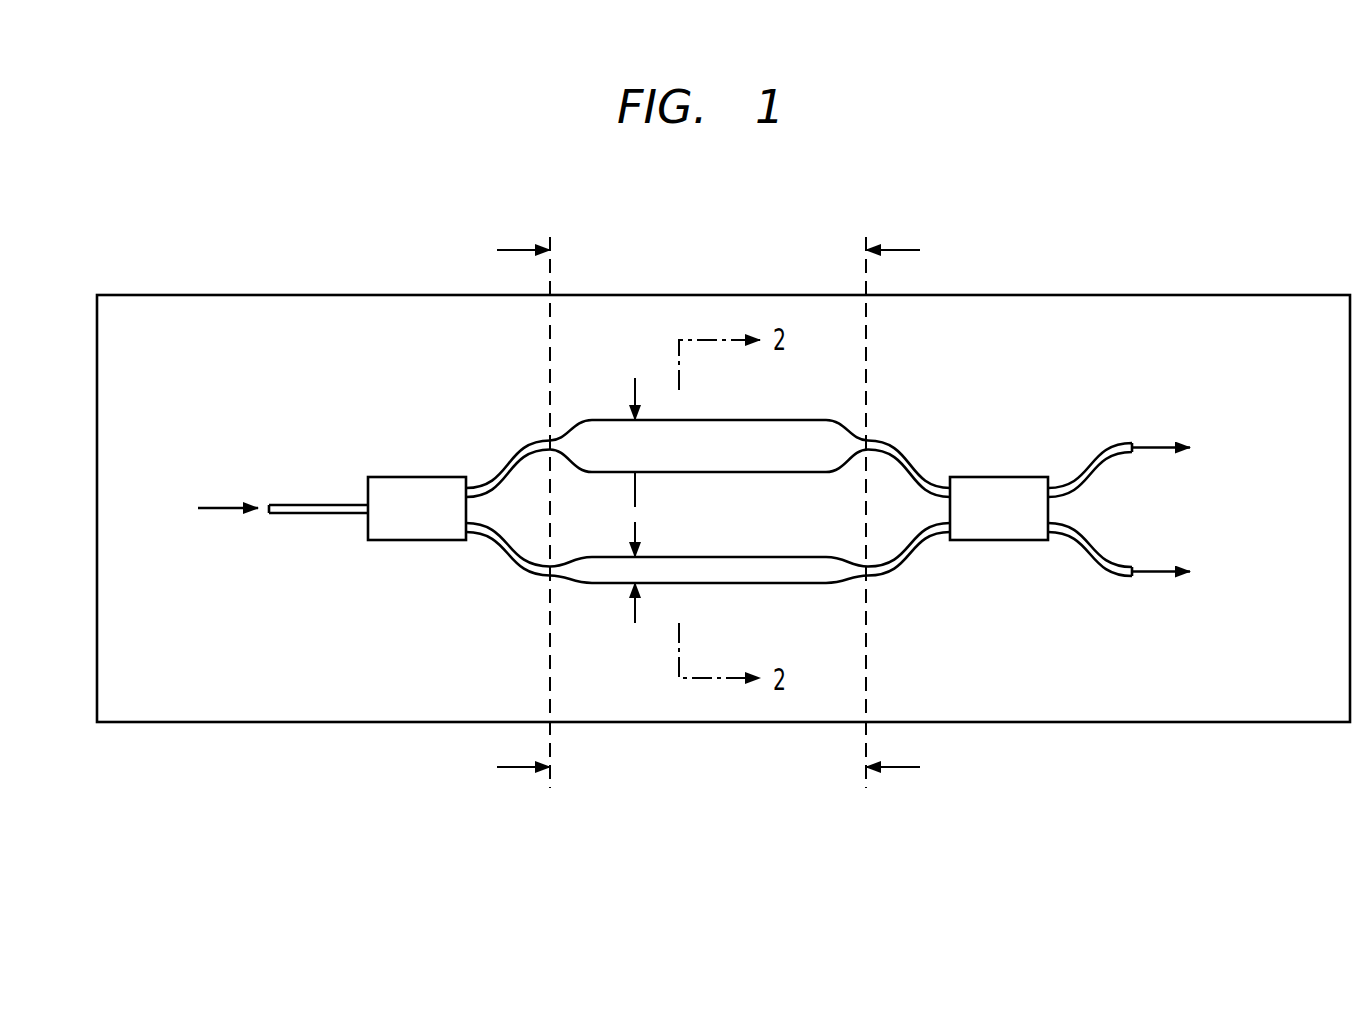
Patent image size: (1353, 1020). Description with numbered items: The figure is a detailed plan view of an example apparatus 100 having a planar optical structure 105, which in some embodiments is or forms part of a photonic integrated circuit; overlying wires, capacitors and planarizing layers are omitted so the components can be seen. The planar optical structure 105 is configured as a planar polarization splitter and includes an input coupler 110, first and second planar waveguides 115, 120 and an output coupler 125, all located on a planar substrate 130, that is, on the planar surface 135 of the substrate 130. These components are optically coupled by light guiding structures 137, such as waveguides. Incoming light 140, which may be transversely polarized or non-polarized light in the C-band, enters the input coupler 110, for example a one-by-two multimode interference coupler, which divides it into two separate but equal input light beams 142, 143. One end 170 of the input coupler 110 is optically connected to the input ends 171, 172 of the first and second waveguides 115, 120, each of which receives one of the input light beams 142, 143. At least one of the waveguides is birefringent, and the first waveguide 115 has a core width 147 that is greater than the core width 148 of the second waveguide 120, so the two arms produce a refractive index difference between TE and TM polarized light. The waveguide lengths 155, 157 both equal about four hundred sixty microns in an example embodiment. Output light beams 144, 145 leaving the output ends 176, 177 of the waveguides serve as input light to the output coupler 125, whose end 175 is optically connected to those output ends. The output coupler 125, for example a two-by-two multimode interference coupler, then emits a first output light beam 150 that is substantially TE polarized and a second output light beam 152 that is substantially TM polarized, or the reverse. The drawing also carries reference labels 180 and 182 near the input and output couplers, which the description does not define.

The apparatus 100 is at (190, 207).
The planar optical structure 105 is at (1016, 318).
The input coupler 110 is at (385, 477).
The first planar waveguide 115 is at (735, 420).
The second planar waveguide 120 is at (730, 583).
The output coupler 125 is at (1015, 477).
The planar substrate 130 is at (162, 704).
The planar surface 135 is at (298, 696).
The light guiding structures 137 is at (500, 460).
The incoming light 140 is at (225, 500).
The first input light beam 142 is at (459, 492).
The second input light beam 143 is at (459, 524).
The first output light beam from first waveguide 144 is at (995, 489).
The second output light beam from second waveguide 145 is at (995, 528).
The first core width 147 is at (635, 390).
The second core width 148 is at (635, 615).
The first output light beam 150 is at (1155, 447).
The second output light beam 152 is at (1155, 573).
The first waveguide length 155 is at (912, 250).
The second waveguide length 157 is at (912, 767).
The end of input coupler 170 is at (487, 511).
The input end of first waveguide 171 is at (540, 425).
The input end of second waveguide 172 is at (540, 590).
The end of output coupler 175 is at (938, 502).
The output end of first waveguide 176 is at (874, 427).
The output end of second waveguide 177 is at (878, 592).
The input splitter location 180 is at (350, 490).
The output combiner location 182 is at (1062, 512).